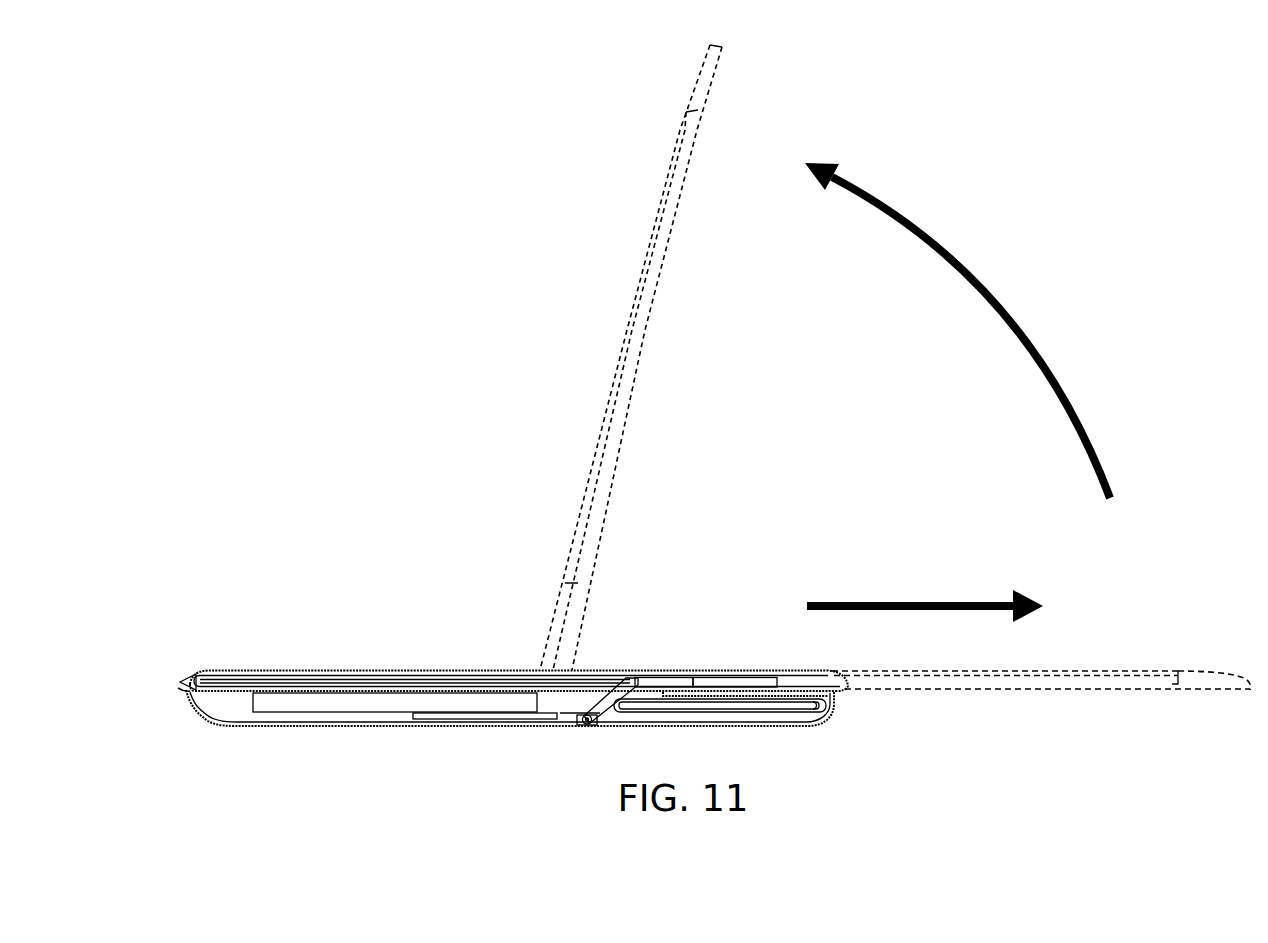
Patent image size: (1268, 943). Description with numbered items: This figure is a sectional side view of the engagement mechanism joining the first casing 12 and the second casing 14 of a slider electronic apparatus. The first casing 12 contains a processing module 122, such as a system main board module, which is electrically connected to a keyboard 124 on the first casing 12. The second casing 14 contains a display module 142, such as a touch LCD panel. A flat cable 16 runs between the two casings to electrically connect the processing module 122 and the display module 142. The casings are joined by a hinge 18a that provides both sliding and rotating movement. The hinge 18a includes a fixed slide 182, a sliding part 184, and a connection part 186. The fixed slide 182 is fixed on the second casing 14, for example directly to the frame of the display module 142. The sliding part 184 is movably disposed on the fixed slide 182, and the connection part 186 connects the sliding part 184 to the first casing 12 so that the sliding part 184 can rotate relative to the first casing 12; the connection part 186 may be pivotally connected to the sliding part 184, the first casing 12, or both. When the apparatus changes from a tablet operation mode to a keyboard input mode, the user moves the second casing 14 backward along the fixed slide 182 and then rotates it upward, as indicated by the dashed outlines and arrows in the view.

The first casing 12 is at (218, 708).
The second casing 14 is at (183, 680).
The flat cable 16 is at (181, 688).
The display module 142 is at (383, 671).
The keyboard 124 is at (356, 703).
The processing module 122 is at (489, 716).
The hinge 18a is at (778, 606).
The fixed slide 182 is at (737, 679).
The sliding part 184 is at (677, 679).
The connection part 186 is at (615, 681).